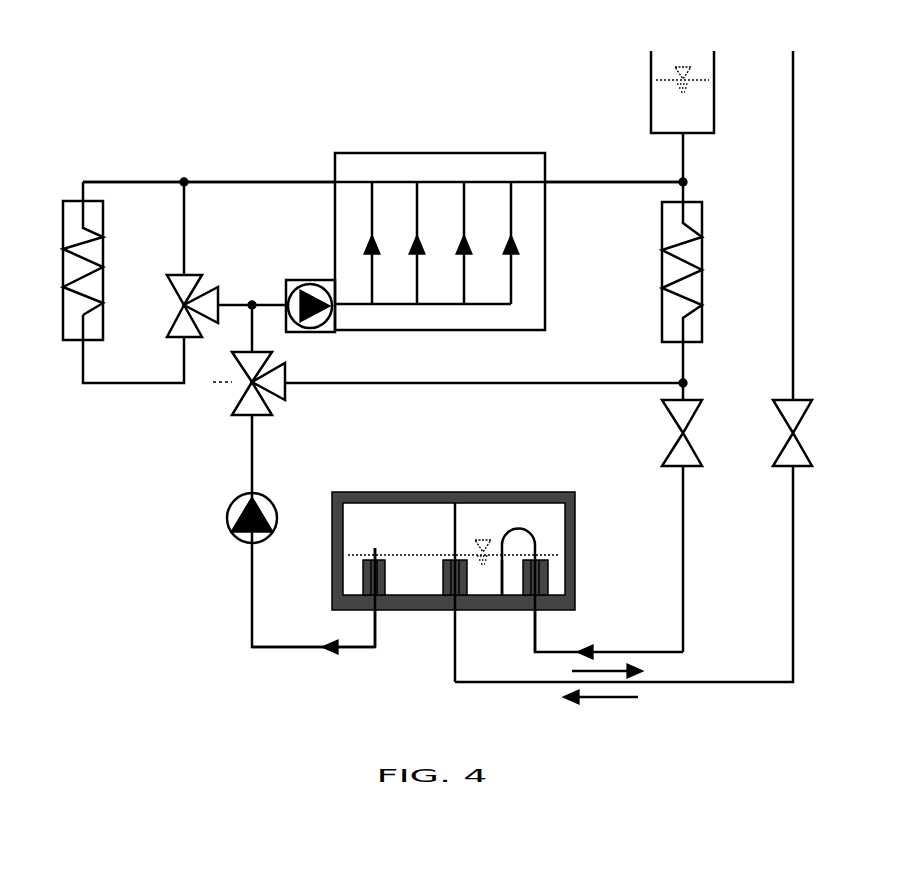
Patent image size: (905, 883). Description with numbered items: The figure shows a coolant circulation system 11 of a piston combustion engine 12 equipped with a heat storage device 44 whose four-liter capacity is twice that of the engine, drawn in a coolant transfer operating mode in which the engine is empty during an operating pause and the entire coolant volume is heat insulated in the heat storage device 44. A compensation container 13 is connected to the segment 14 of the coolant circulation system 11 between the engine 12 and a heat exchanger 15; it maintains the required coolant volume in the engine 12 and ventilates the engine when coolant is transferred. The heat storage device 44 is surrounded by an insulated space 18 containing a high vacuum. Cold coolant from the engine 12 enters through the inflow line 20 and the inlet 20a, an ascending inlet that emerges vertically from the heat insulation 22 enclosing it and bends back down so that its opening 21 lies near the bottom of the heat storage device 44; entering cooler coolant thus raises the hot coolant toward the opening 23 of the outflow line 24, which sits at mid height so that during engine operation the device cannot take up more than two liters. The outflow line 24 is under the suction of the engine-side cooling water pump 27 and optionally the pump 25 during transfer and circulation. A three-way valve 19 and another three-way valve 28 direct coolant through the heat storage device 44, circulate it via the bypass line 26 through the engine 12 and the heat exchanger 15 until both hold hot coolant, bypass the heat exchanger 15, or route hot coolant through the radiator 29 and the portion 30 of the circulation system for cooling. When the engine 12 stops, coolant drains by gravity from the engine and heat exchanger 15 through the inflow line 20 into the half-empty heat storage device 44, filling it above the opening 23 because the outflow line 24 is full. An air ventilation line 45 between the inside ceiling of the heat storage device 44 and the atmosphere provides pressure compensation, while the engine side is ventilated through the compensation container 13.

The coolant circulation system 11 is at (292, 88).
The piston combustion engine 12 is at (504, 152).
The compensation container 13 is at (713, 108).
The segment 14 is at (586, 181).
The heat exchanger 15 is at (701, 244).
The insulated space 18 is at (339, 492).
The three-way valve 19 is at (238, 401).
The inflow line 20 is at (615, 652).
The inlet 20a is at (510, 534).
The opening 21 is at (494, 604).
The heat insulation 22 is at (383, 560).
The opening 23 is at (370, 541).
The outflow line 24 is at (292, 647).
The pump 25 is at (277, 512).
The bypass line 26 is at (461, 382).
The engine-side cooling water pump 27 is at (295, 279).
The three-way valve 28 is at (169, 325).
The radiator 29 is at (63, 232).
The portion 30 is at (278, 181).
The heat storage device 44 is at (524, 468).
The air ventilation line 45 is at (794, 545).